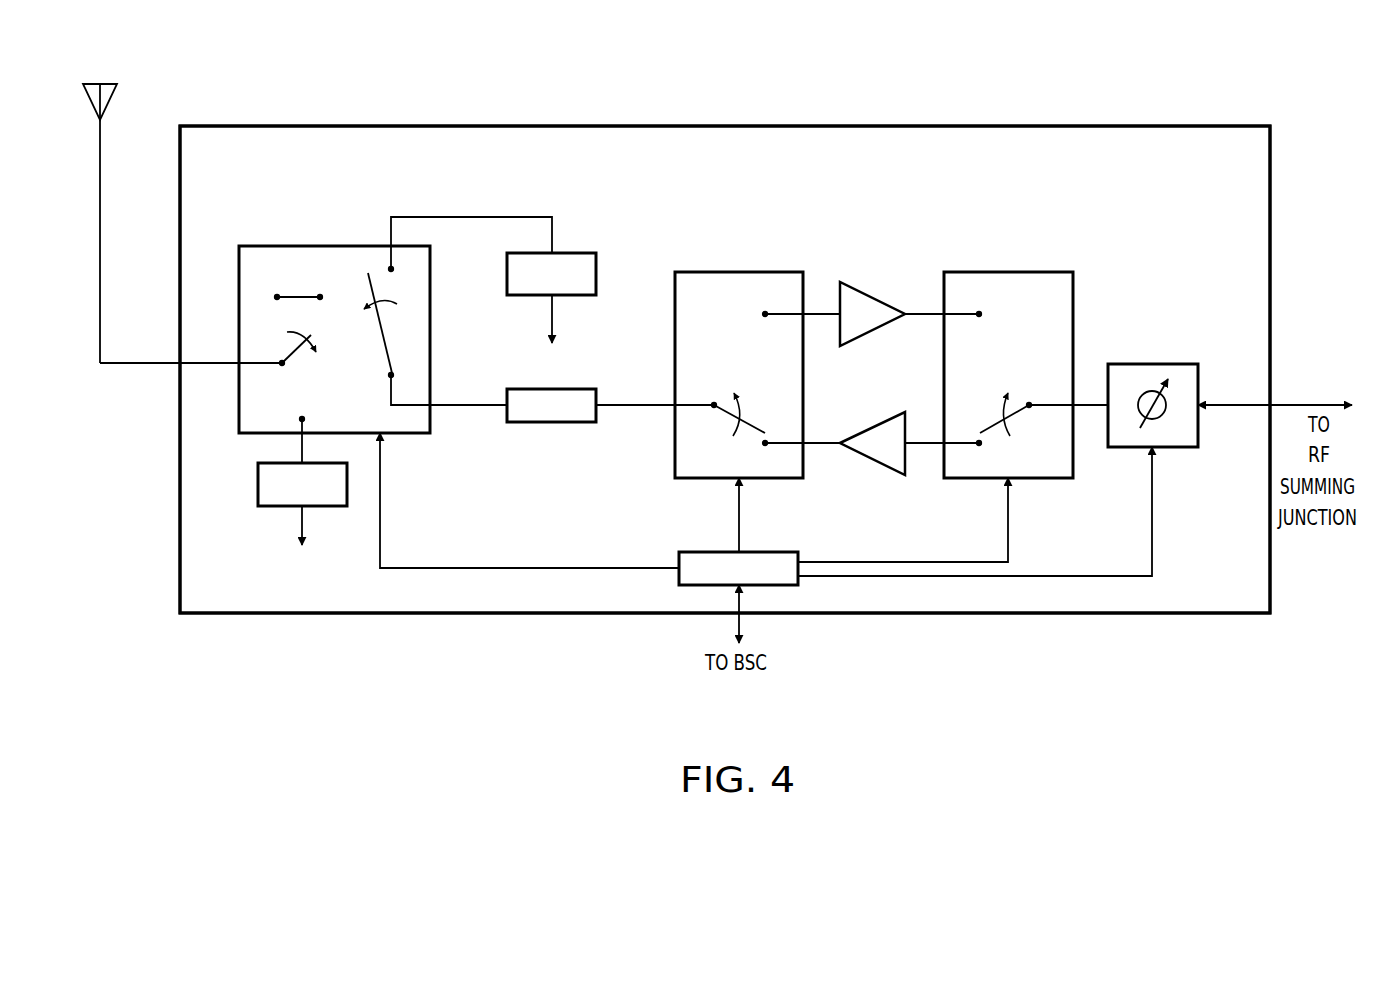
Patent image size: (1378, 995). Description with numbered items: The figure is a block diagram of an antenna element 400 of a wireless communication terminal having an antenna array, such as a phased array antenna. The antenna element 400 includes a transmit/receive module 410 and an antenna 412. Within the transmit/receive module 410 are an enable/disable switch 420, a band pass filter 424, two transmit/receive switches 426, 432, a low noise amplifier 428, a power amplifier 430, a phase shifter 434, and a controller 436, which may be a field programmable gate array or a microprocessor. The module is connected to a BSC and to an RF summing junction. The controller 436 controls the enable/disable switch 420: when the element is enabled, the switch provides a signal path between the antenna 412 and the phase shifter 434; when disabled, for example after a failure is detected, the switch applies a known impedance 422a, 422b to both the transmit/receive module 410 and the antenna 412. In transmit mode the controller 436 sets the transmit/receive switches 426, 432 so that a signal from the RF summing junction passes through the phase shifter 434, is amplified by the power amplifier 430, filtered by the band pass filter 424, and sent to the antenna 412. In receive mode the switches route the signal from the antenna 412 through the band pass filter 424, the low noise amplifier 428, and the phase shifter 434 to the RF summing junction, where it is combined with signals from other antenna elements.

The antenna element 400 is at (890, 86).
The transmit/receive module 410 is at (354, 126).
The antenna 412 is at (117, 94).
The enable/disable switch 420 is at (240, 437).
The known impedance 422a is at (580, 253).
The known impedance 422b is at (274, 508).
The band pass filter 424 is at (547, 423).
The transmit/receive switch 426 is at (675, 326).
The low noise amplifier 428 is at (870, 296).
The power amplifier 430 is at (874, 426).
The transmit/receive switch 432 is at (944, 352).
The phase shifter 434 is at (1190, 450).
The controller 436 is at (698, 552).